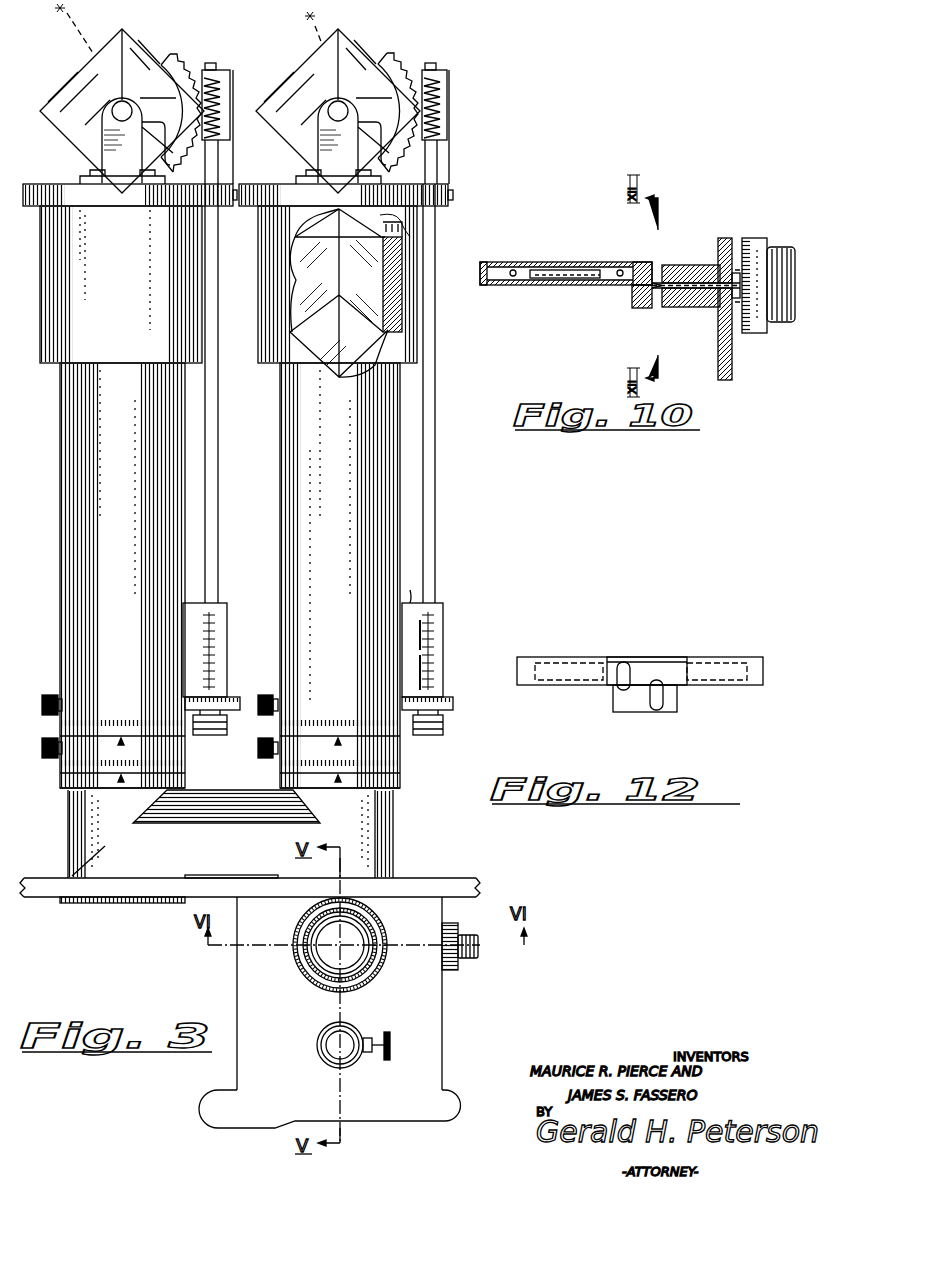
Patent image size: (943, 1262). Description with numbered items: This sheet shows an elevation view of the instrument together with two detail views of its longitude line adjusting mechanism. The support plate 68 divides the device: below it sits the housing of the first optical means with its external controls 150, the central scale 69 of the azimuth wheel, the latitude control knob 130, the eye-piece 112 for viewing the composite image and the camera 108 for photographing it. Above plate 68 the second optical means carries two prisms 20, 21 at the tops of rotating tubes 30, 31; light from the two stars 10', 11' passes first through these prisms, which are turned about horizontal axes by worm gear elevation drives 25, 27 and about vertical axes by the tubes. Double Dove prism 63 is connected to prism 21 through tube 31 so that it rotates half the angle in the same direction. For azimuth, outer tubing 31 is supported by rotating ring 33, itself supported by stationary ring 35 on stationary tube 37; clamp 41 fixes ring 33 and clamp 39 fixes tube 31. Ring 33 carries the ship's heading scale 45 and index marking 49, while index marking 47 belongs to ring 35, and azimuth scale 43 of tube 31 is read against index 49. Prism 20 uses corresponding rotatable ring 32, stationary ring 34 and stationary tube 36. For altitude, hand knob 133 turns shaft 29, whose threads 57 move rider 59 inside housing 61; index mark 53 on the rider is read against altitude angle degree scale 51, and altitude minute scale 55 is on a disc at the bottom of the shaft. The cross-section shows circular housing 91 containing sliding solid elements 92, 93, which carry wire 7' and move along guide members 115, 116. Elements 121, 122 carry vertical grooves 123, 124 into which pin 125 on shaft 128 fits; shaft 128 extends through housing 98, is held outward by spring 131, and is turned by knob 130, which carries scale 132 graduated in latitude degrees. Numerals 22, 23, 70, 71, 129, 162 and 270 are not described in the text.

In FIG. 3, the star 10' is at (264, 345).
In FIG. 3, the star 11' is at (324, 26).
In FIG. 3, the prism 20 is at (133, 47).
In FIG. 3, the prism 21 is at (349, 42).
In FIG. 3, the pivot mount of first prism 22 is at (118, 113).
In FIG. 3, the pivot mount of second prism 23 is at (334, 113).
In FIG. 3, the worm gear elevation drive 25 is at (216, 96).
In FIG. 3, the worm gear elevation drive 27 is at (437, 104).
In FIG. 3, the shaft 29 is at (432, 419).
In FIG. 3, the rotating tube 30 is at (60, 540).
In FIG. 3, the rotating tube 31 is at (279, 506).
In FIG. 3, the rotatable ring 32 is at (187, 755).
In FIG. 3, the rotating ring 33 is at (400, 753).
In FIG. 3, the stationary ring 34 is at (187, 781).
In FIG. 3, the stationary ring 35 is at (280, 781).
In FIG. 3, the stationary tube 36 is at (68, 815).
In FIG. 3, the stationary tube 37 is at (395, 832).
In FIG. 3, the clamp 39 is at (260, 695).
In FIG. 3, the clamp 41 is at (258, 750).
In FIG. 3, the azimuth scale 43 is at (305, 718).
In FIG. 3, the ship's heading scale 45 is at (300, 763).
In FIG. 3, the index marking 47 is at (338, 778).
In FIG. 3, the index marking 49 is at (340, 750).
In FIG. 3, the altitude angle degree scale 51 is at (412, 624).
In FIG. 3, the index mark 53 is at (414, 650).
In FIG. 3, the altitude minute scale 55 is at (450, 697).
In FIG. 3, the threads 57 is at (418, 612).
In FIG. 3, the rider 59 is at (432, 648).
In FIG. 3, the housing 61 is at (411, 588).
In FIG. 3, the double Dove prism 63 is at (308, 345).
In FIG. 3, the support plate 68 is at (410, 878).
In FIG. 3, the central scale 69 is at (378, 926).
In FIG. 3, the middle dial ring 70 is at (380, 952).
In FIG. 3, the dial hub 71 is at (372, 977).
In FIG. 3, the camera 108 is at (450, 1090).
In FIG. 3, the eye-piece 112 is at (358, 1032).
In FIG. 10, the eye-piece 112 is at (647, 287).
In FIG. 3, the knob 130 is at (473, 932).
In FIG. 10, the knob 130 is at (776, 250).
In FIG. 3, the hand knob 133 is at (434, 736).
In FIG. 3, the external controls 150 is at (330, 952).
In FIG. 3, the prism holder edge 162 is at (383, 224).
In FIG. 3, the scale graduation 270 is at (341, 711).
In FIG. 10, the circular housing 91 is at (483, 262).
In FIG. 12, the circular housing 91 is at (753, 672).
In FIG. 10, the solid element 92 is at (519, 267).
In FIG. 12, the solid element 92 is at (703, 668).
In FIG. 12, the solid element 93 is at (578, 668).
In FIG. 10, the wire 7' is at (610, 252).
In FIG. 10, the housing 98 is at (720, 250).
In FIG. 10, the guide member 115 is at (512, 279).
In FIG. 10, the guide member 116 is at (624, 270).
In FIG. 10, the element 121 is at (642, 309).
In FIG. 12, the element 121 is at (657, 666).
In FIG. 12, the element 122 is at (632, 706).
In FIG. 12, the vertical groove 123 is at (657, 708).
In FIG. 12, the vertical groove 124 is at (625, 665).
In FIG. 10, the pin 125 is at (663, 308).
In FIG. 10, the shaft 128 is at (687, 308).
In FIG. 10, the collar 129 is at (712, 308).
In FIG. 10, the spring 131 is at (738, 303).
In FIG. 10, the scale 132 is at (747, 238).